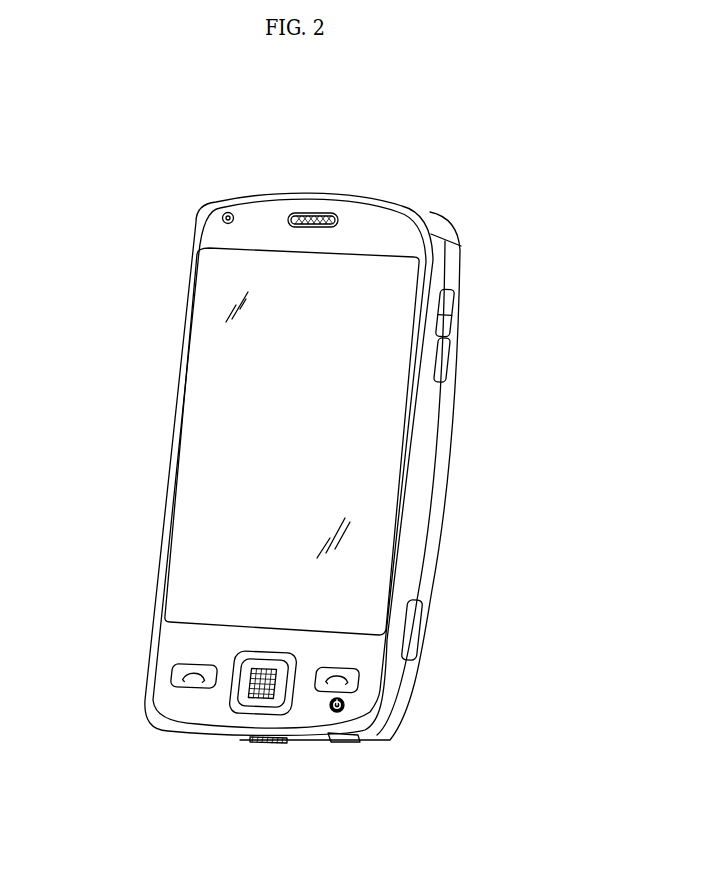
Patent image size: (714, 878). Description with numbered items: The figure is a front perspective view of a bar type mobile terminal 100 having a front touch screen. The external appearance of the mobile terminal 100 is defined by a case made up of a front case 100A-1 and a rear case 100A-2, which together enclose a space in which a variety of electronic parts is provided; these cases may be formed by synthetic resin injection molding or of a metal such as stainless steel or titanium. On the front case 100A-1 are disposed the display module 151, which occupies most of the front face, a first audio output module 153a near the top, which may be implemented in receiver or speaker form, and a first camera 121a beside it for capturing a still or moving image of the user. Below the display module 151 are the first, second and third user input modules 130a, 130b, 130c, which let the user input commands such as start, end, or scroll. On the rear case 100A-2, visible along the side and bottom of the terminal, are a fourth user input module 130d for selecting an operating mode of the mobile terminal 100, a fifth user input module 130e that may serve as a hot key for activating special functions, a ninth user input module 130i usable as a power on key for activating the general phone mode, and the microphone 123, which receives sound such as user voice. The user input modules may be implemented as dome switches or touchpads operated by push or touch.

The mobile terminal 100 is at (161, 229).
The front case 100A-1 is at (433, 228).
The rear case 100A-2 is at (453, 263).
The display module 151 is at (203, 452).
The first camera 121a is at (226, 212).
The first audio output module 153a is at (305, 212).
The fourth user input module 130d is at (450, 337).
The fifth user input module 130e is at (422, 623).
The first user input module 130a is at (192, 682).
The second user input module 130b is at (253, 697).
The third user input module 130c is at (358, 682).
The microphone 123 is at (268, 742).
The ninth user input module 130i is at (349, 743).